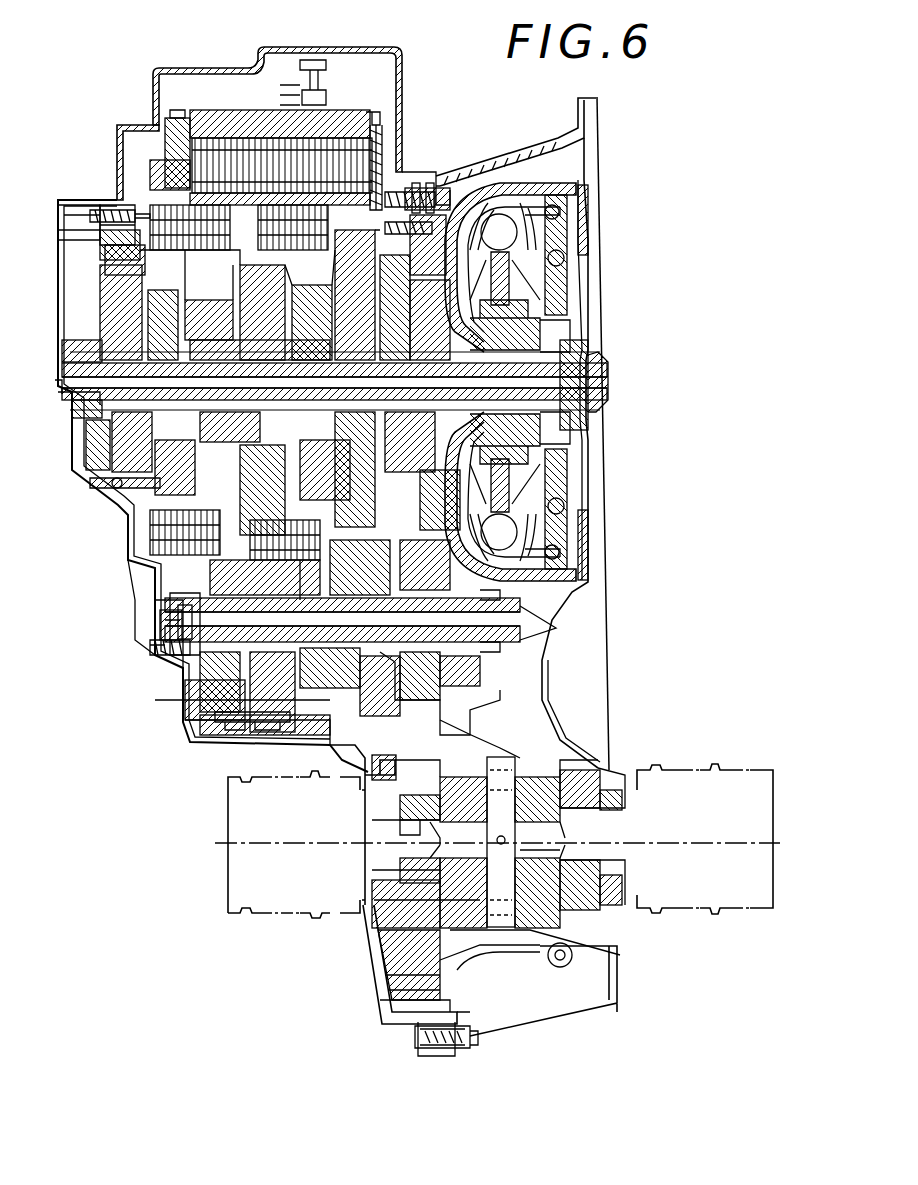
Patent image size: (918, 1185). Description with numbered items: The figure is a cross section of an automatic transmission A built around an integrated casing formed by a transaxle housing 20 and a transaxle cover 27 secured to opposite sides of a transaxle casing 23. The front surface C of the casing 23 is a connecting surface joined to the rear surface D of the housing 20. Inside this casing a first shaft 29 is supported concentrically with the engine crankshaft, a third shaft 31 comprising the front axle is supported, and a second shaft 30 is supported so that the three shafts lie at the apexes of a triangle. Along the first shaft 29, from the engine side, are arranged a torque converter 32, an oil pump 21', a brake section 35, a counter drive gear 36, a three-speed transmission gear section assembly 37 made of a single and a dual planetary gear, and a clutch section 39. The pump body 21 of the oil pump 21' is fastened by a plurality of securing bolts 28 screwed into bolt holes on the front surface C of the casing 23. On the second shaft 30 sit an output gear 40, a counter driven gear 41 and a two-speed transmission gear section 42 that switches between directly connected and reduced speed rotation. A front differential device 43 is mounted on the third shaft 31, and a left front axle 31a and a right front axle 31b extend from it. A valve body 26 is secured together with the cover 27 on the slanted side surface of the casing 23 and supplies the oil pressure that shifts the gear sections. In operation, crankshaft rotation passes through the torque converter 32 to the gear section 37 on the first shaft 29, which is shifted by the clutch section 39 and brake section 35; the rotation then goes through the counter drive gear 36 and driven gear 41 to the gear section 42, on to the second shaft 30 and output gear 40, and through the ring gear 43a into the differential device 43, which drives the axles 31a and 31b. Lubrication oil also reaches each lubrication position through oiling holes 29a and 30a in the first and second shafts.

The automatic transmission A is at (447, 68).
The transaxle housing 20 is at (520, 146).
The pump body 21 is at (510, 363).
The oil pump 21' is at (334, 263).
The transaxle casing 23 is at (200, 728).
The valve body 26 is at (210, 100).
The transaxle cover 27 is at (320, 48).
The securing bolts 28 is at (450, 186).
The first shaft 29 is at (572, 382).
The oiling hole 29a is at (86, 392).
The second shaft 30 is at (445, 640).
The oiling hole 30a is at (178, 622).
The third shaft 31 is at (220, 842).
The left front axle 31a is at (343, 905).
The right front axle 31b is at (672, 910).
The torque converter 32 is at (530, 168).
The brake section 35 is at (418, 185).
The counter drive gear 36 is at (270, 130).
The three-speed transmission gear section assembly 37 is at (118, 215).
The clutch section 39 is at (120, 240).
The output gear 40 is at (440, 680).
The counter driven gear 41 is at (330, 745).
The two-speed transmission gear section 42 is at (228, 722).
The front differential device 43 is at (545, 772).
The ring gear 43a is at (406, 990).
The front surface C is at (432, 192).
The rear surface D is at (418, 192).